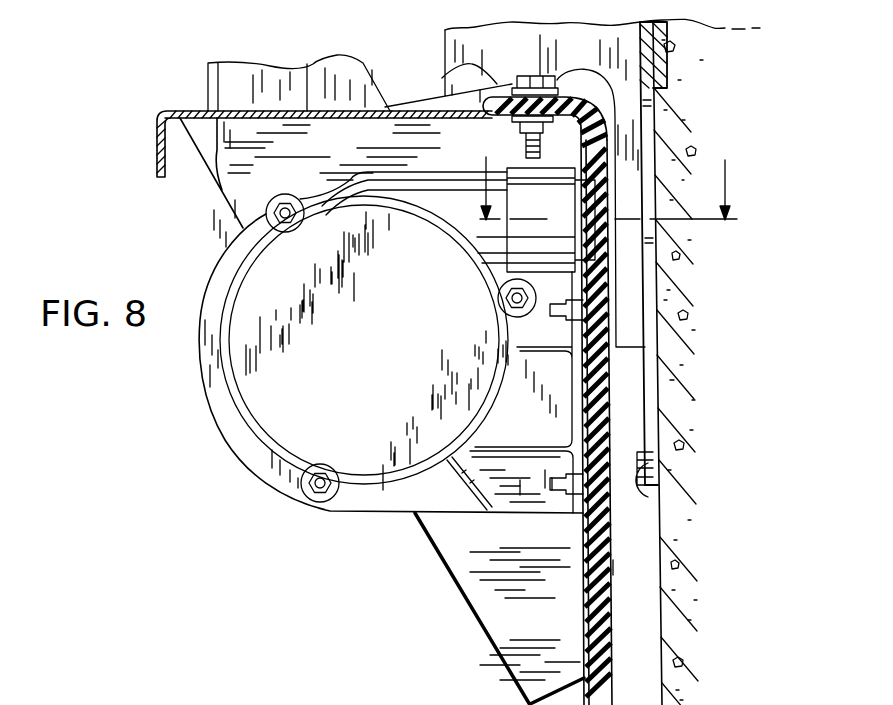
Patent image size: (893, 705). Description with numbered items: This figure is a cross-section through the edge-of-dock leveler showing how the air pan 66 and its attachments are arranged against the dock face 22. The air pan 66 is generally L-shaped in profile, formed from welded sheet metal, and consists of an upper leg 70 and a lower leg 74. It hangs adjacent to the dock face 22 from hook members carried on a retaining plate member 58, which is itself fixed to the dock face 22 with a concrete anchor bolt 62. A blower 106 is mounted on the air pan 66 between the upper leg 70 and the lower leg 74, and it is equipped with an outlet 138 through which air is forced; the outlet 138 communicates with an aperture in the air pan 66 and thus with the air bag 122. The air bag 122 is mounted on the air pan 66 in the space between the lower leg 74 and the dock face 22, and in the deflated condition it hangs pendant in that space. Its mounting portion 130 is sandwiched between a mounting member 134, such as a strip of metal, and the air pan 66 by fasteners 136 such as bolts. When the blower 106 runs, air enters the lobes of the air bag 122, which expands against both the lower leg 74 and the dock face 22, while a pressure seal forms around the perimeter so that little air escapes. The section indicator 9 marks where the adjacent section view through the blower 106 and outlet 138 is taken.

The dock face 22 is at (667, 650).
The retaining plate member 58 is at (642, 406).
The concrete anchor bolt 62 is at (660, 497).
The air pan 66 is at (495, 551).
The upper leg 70 is at (213, 183).
The lower leg 74 is at (583, 614).
The blower 106 is at (372, 378).
The air bag 122 is at (613, 568).
The mounting portion 130 is at (444, 80).
The mounting member 134 is at (590, 70).
The fastener 136 is at (557, 59).
The outlet 138 is at (563, 212).
The section line 9- 9 is at (608, 175).